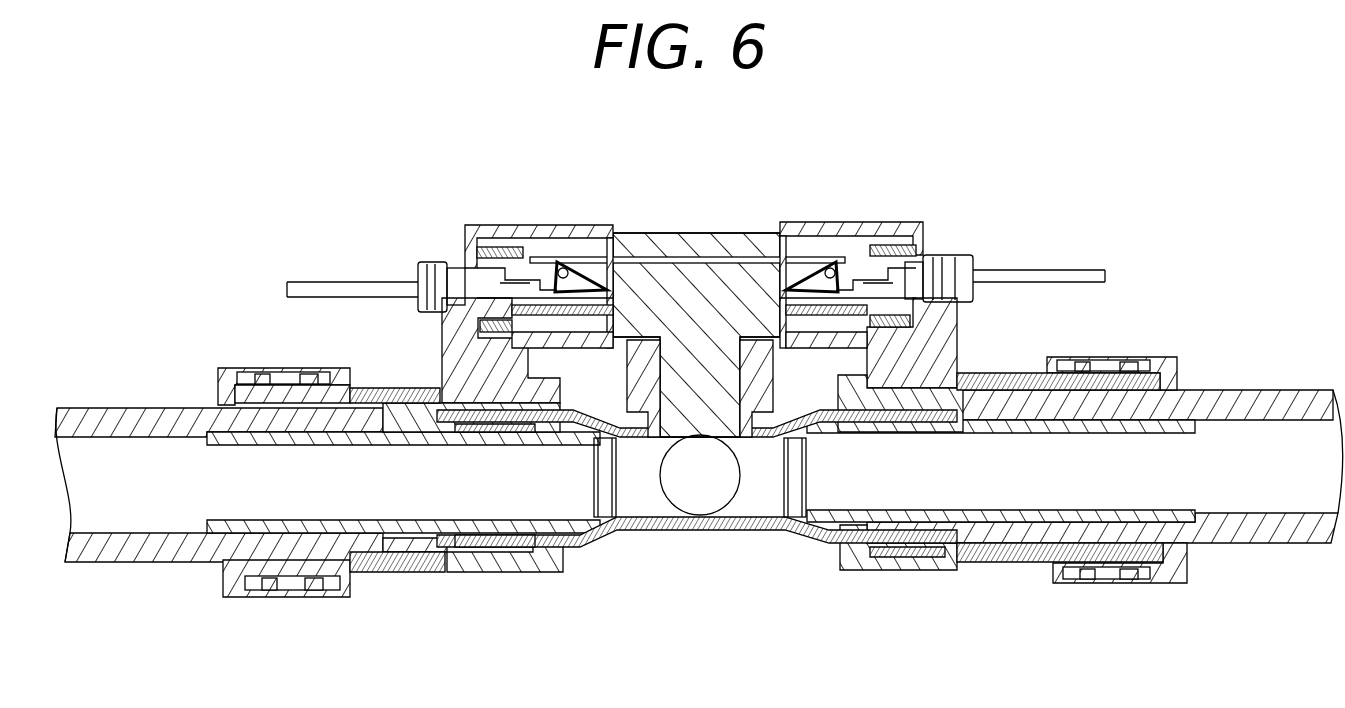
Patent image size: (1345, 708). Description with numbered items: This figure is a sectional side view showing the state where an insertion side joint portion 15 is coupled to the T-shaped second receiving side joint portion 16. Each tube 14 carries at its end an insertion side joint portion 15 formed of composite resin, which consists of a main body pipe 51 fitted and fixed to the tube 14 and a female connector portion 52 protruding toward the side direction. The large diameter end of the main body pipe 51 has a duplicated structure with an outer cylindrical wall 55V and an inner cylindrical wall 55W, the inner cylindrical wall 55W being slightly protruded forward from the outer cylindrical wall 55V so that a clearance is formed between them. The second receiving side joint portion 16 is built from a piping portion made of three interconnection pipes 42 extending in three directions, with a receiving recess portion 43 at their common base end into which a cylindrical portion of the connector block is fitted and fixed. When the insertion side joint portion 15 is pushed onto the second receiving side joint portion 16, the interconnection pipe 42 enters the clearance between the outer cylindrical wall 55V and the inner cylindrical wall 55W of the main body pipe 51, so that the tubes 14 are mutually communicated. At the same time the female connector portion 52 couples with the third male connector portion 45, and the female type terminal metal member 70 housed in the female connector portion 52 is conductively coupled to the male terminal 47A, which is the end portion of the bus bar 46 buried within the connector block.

The tube 14 is at (128, 563).
The insertion side joint portion 15 is at (228, 355).
The second receiving side joint portion 16 is at (733, 233).
The interconnection pipe 42 is at (523, 550).
The receiving recess portion 43 is at (775, 382).
The third male connector portion 45 is at (522, 247).
The bus bar 46 is at (676, 233).
The male terminal 47A is at (549, 262).
The main body pipe 51 is at (383, 540).
The female connector portion 52 is at (470, 226).
The outer cylindrical wall 55V is at (490, 549).
The inner cylindrical wall 55W is at (450, 573).
The female type terminal metal member 70 is at (583, 262).